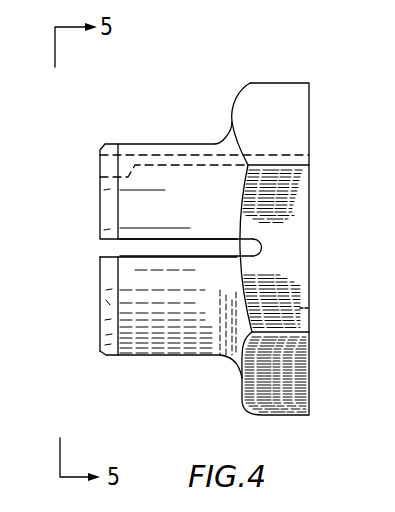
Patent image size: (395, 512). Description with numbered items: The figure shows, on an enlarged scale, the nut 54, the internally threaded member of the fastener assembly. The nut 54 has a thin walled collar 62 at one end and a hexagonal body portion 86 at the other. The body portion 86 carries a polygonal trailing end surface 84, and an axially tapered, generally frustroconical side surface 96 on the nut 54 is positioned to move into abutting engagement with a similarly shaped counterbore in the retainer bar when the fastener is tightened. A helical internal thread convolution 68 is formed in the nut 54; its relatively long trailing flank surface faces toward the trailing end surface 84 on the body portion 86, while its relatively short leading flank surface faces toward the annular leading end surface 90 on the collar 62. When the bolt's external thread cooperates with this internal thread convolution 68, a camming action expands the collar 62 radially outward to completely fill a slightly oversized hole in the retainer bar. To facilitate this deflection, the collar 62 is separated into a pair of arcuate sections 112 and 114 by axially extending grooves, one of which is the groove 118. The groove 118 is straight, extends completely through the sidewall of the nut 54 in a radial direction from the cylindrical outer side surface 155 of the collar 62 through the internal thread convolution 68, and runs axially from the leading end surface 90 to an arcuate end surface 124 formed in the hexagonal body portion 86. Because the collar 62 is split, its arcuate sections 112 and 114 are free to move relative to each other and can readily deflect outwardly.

The nut 54 is at (330, 112).
The frustroconical side surface 96 is at (232, 122).
The thin walled collar 62 is at (186, 133).
The helical internal thread convolution 68 is at (100, 177).
The arcuate section 112 is at (127, 204).
The axially extending groove 118 is at (213, 238).
The arcuate end surface 124 is at (263, 248).
The polygonal trailing end surface 84 is at (313, 308).
The hexagonal body portion 86 is at (288, 416).
The cylindrical outer side surface 155 is at (118, 285).
The leading end surface 90 is at (100, 317).
The arcuate section 114 is at (157, 357).